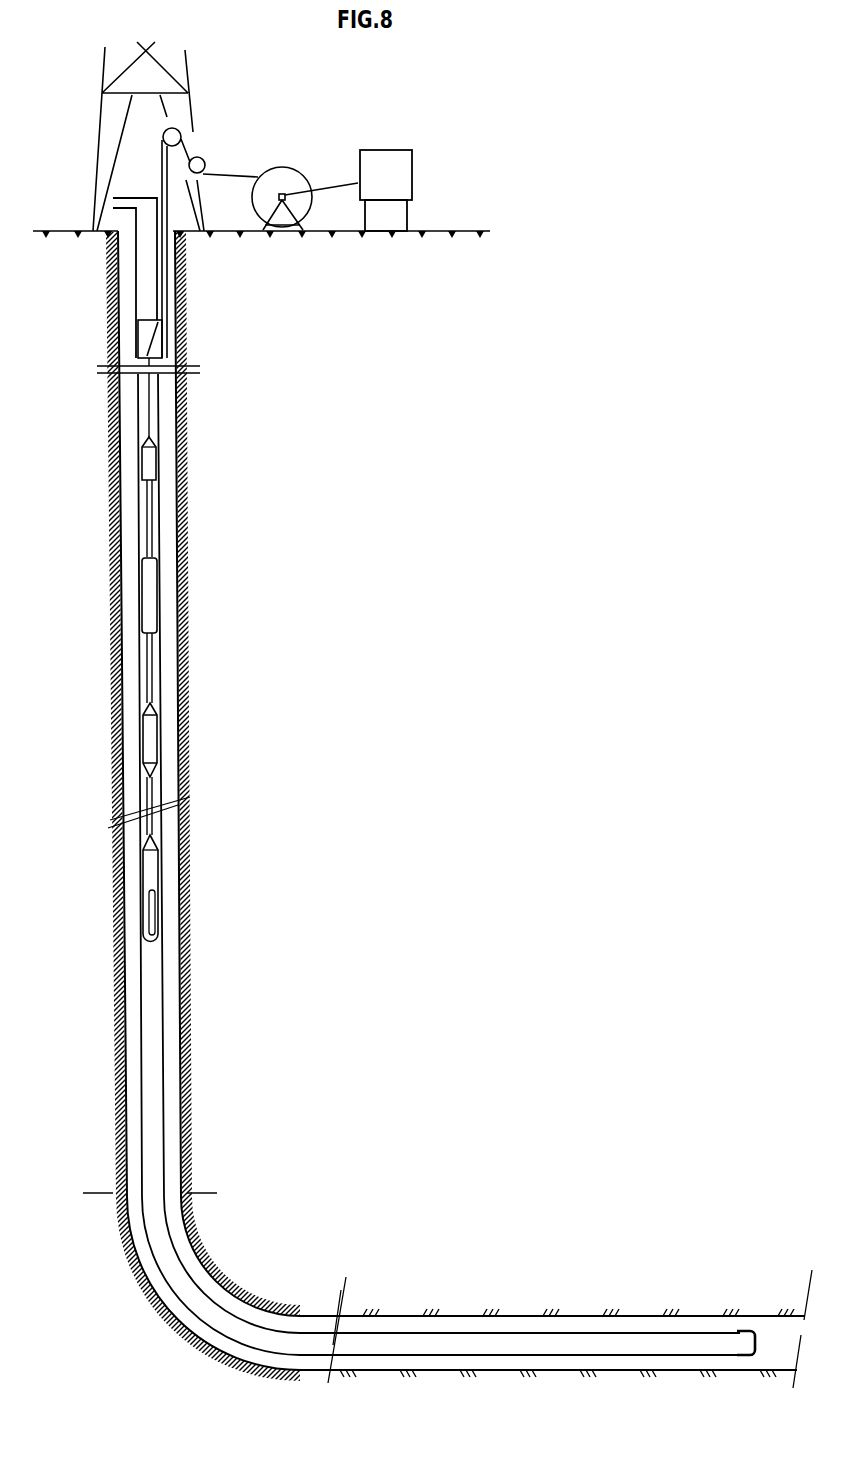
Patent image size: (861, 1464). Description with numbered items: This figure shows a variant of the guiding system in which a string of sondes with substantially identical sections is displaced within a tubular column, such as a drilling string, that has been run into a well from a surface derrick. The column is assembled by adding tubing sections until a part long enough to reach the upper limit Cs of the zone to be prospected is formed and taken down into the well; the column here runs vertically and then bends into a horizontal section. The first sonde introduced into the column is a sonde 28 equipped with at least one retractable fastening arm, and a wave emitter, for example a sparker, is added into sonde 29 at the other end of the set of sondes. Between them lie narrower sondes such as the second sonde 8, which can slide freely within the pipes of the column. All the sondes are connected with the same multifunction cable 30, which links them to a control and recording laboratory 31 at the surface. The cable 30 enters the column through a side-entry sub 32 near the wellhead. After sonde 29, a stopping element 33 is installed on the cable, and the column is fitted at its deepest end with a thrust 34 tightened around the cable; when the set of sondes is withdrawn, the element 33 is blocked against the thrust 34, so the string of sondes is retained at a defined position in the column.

The control and recording laboratory 31 is at (378, 152).
The side-entry sub 32 is at (162, 348).
The stopping element 33 is at (156, 462).
The multifunction cable 30 is at (150, 530).
The sonde 29 is at (156, 600).
The second sonde 8 is at (157, 743).
The sonde 28 is at (160, 880).
The upper limit of the zone to be prospected Cs is at (197, 1192).
The thrust 34 is at (743, 1327).